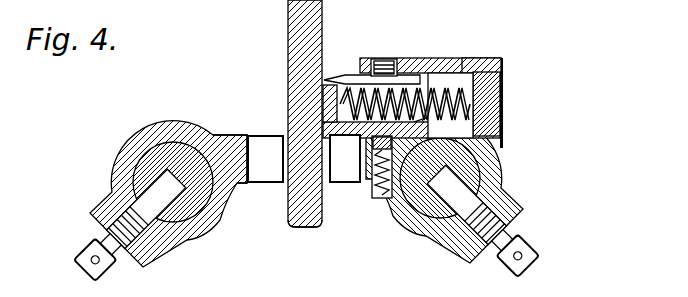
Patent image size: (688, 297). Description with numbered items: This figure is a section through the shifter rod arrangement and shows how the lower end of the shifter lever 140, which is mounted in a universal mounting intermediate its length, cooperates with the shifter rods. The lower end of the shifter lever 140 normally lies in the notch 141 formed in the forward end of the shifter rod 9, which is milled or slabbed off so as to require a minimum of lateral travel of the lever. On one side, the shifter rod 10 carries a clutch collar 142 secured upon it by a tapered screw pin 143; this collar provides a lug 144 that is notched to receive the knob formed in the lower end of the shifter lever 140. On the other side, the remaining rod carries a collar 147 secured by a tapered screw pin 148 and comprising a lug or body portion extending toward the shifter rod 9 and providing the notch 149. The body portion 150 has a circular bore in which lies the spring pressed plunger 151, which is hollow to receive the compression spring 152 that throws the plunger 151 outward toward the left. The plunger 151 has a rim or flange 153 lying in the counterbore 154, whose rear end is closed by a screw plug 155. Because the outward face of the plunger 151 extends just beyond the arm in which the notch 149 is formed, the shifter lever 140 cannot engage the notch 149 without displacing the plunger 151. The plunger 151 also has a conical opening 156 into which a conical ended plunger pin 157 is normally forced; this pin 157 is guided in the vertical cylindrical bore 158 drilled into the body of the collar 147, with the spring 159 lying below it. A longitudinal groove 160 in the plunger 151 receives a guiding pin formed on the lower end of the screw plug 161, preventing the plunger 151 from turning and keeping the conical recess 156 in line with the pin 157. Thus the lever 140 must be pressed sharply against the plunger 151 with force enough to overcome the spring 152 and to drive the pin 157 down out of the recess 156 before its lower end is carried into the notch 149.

The shifter rod 9 is at (290, 228).
The shifter rod 10 is at (133, 147).
The shifter lever 140 is at (288, 44).
The notch 141 is at (265, 183).
The clutch collar 142 is at (160, 120).
The tapered screw pin 143 is at (117, 210).
The lug 144 is at (240, 111).
The collar 147 is at (494, 148).
The tapered screw pin 148 is at (517, 198).
The notch 149 is at (342, 178).
The body portion 150 is at (504, 63).
The spring pressed plunger 151 is at (332, 108).
The compression spring 152 is at (503, 107).
The rim or flange 153 is at (443, 58).
The counterbore 154 is at (470, 58).
The screw plug 155 is at (503, 84).
The conical opening 156 is at (365, 88).
The plunger pin 157 is at (373, 175).
The vertical cylindrical bore 158 is at (413, 232).
The spring 159 is at (386, 183).
The groove 160 is at (330, 78).
The screw plug 161 is at (387, 62).